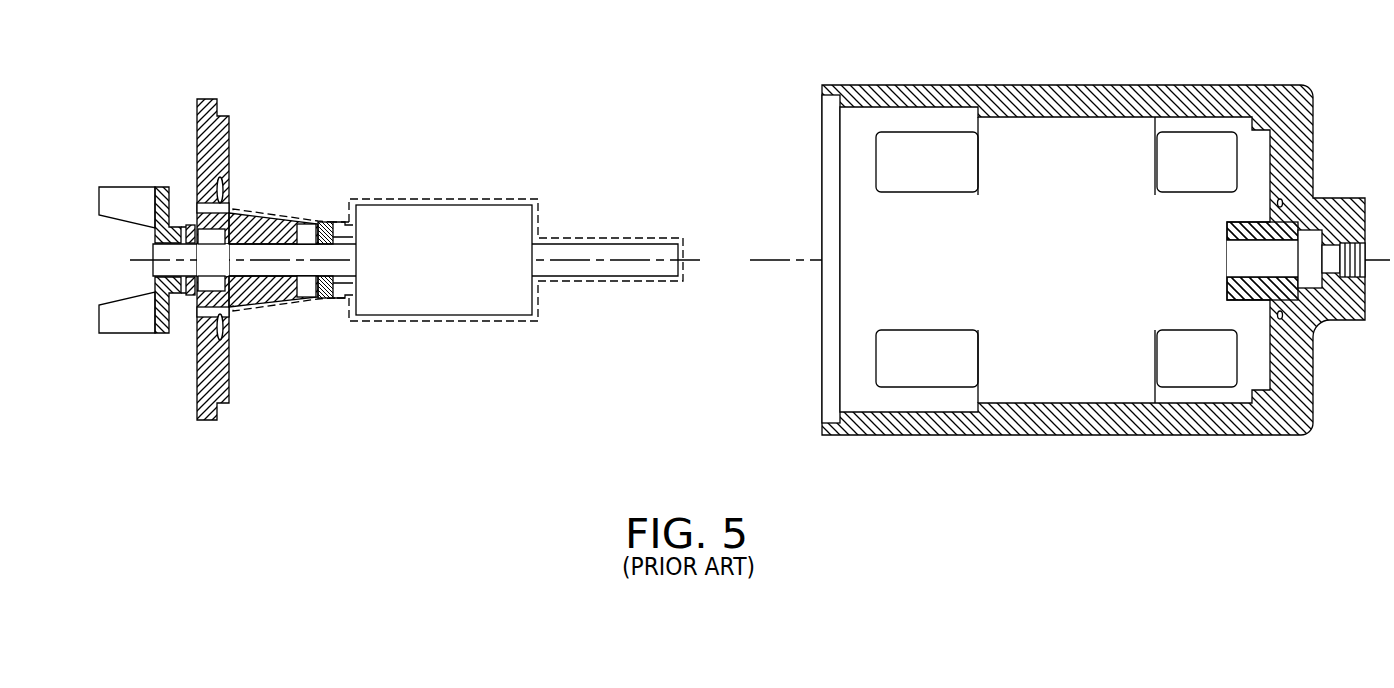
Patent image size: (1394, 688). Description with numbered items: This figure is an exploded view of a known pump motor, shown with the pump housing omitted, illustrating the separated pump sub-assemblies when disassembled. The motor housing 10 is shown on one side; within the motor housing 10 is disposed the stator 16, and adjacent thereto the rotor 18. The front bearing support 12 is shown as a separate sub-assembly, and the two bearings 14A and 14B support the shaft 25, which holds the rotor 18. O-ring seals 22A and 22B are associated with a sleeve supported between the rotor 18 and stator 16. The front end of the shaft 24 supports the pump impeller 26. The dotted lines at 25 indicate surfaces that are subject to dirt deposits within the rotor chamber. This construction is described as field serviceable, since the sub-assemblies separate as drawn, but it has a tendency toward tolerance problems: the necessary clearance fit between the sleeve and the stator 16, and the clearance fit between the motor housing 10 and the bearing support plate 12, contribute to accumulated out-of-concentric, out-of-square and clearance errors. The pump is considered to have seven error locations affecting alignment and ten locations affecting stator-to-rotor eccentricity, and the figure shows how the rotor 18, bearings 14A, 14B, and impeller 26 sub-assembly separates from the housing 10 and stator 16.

The motor housing 10 is at (1027, 95).
The front bearing support 12 is at (225, 130).
The bearing 14A is at (258, 222).
The bearing 14B is at (1275, 233).
The stator 16 is at (1083, 160).
The rotor 18 is at (432, 217).
The o-ring seal 22A is at (227, 325).
The o-ring seal 22B is at (1287, 320).
The front end of the shaft 24 is at (587, 248).
The shaft 25 is at (437, 322).
The pump impeller 26 is at (135, 187).